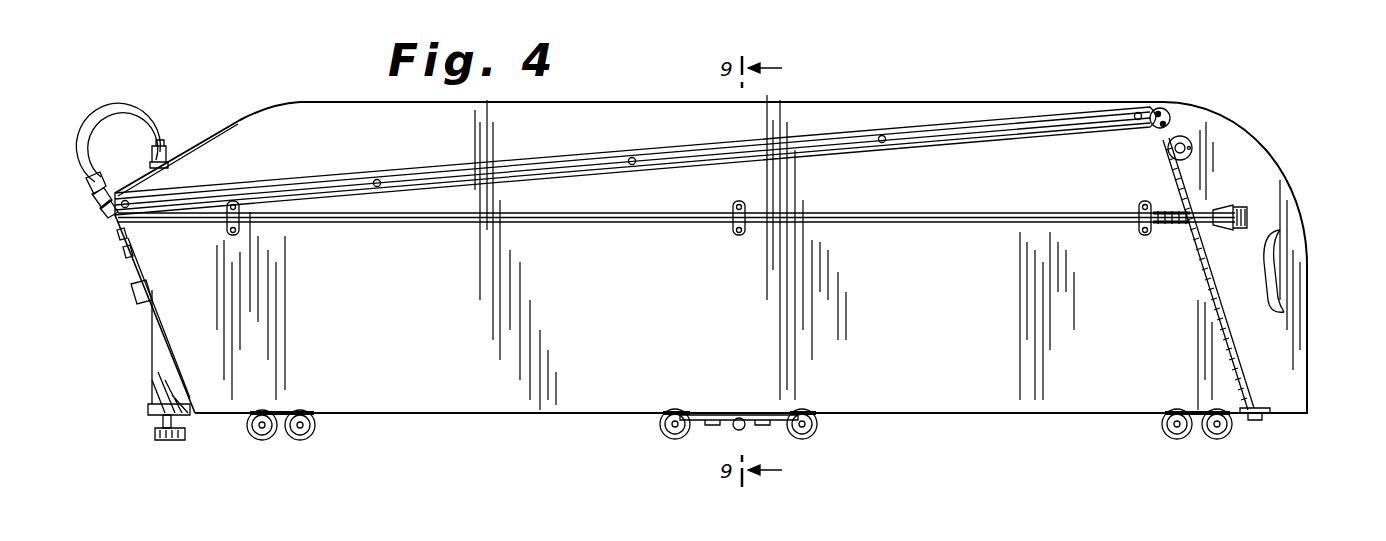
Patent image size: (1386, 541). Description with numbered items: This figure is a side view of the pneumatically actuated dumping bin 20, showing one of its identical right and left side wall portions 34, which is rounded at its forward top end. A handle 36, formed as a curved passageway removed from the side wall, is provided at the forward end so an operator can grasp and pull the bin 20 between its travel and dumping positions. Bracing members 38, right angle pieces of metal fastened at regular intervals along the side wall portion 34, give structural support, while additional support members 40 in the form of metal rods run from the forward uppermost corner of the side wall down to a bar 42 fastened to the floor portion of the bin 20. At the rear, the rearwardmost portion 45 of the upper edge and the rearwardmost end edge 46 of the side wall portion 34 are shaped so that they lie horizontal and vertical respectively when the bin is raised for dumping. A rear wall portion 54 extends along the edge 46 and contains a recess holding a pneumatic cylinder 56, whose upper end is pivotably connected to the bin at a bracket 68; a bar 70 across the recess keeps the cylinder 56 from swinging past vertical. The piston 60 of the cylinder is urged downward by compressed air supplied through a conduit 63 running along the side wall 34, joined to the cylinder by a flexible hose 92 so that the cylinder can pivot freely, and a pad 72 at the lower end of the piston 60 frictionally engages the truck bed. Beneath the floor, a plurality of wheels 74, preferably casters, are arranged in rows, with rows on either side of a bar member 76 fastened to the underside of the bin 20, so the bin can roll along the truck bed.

The dumping bin 20 is at (1035, 100).
The side wall portion 34 is at (180, 327).
The handle 36 is at (1293, 268).
The bracing member 38 is at (850, 130).
The additional support member 40 is at (1233, 340).
The bar 42 is at (1265, 412).
The rearwardmost portion of the upper edge 45 is at (212, 130).
The rearwardmost end edge 46 is at (168, 348).
The rear wall portion 54 is at (123, 237).
The pneumatic cylinder 56 is at (150, 380).
The piston 60 is at (155, 431).
The conduit 63 is at (910, 214).
The bracket 68 is at (166, 142).
The bar 70 is at (133, 298).
The pad 72 is at (168, 441).
The wheels 74 is at (294, 442).
The bar member 76 is at (735, 428).
The flexible hose 92 is at (90, 124).